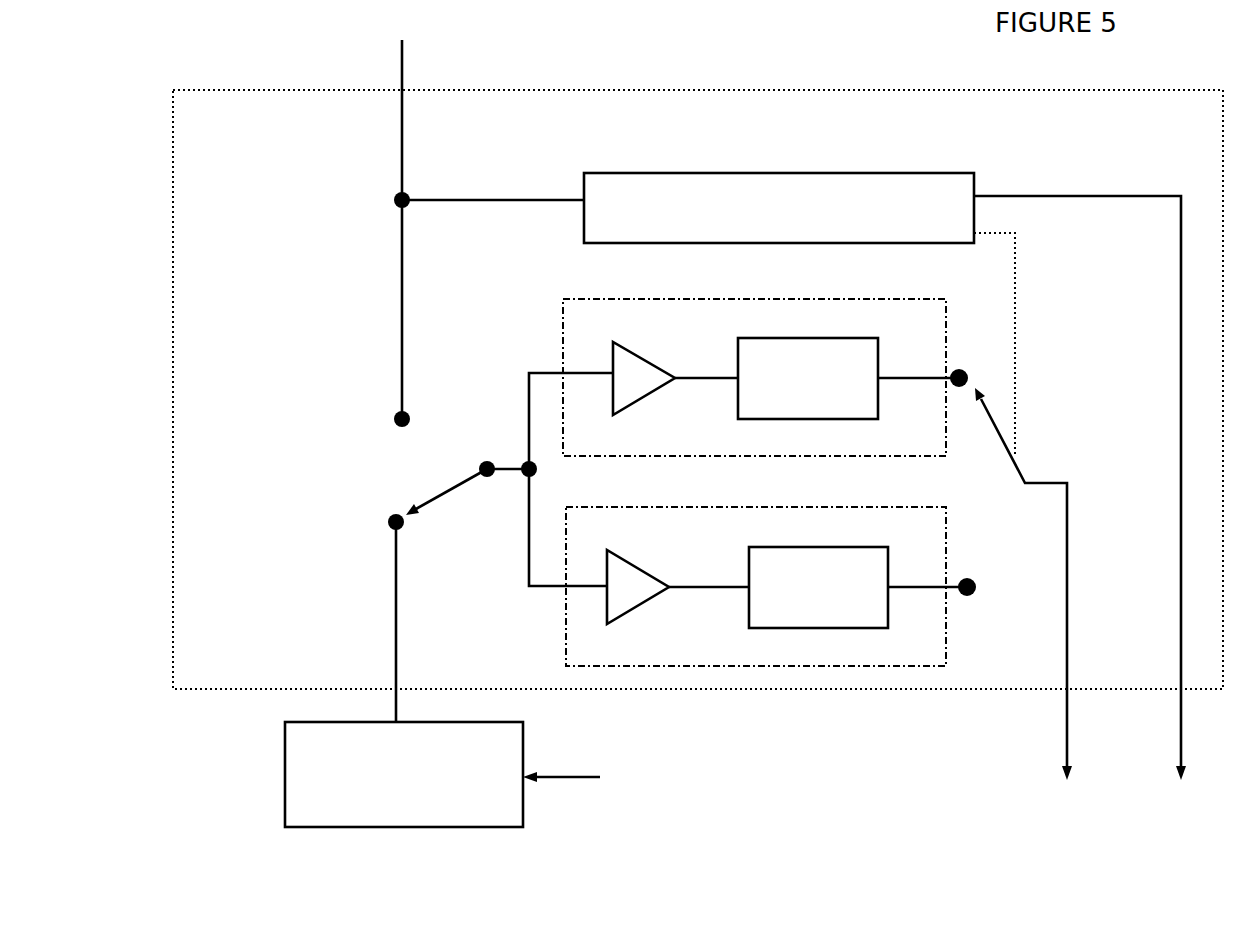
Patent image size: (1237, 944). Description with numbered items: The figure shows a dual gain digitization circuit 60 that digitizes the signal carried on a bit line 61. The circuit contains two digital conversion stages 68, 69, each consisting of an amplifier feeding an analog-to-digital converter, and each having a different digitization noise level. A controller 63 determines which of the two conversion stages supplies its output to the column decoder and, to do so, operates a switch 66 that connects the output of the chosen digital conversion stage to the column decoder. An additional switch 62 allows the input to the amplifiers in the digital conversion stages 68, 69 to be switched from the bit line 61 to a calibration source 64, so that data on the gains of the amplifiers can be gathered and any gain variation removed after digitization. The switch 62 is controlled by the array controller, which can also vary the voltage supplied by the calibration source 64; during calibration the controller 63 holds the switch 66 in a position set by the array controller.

The dual gain digitization circuit 60 is at (638, 92).
The bit line 61 is at (402, 50).
The switch 62 is at (434, 500).
The controller 63 is at (920, 176).
The calibration source 64 is at (285, 777).
The switch 66 is at (993, 425).
The digital conversion stage 68 is at (722, 455).
The digital conversion stage 69 is at (948, 648).